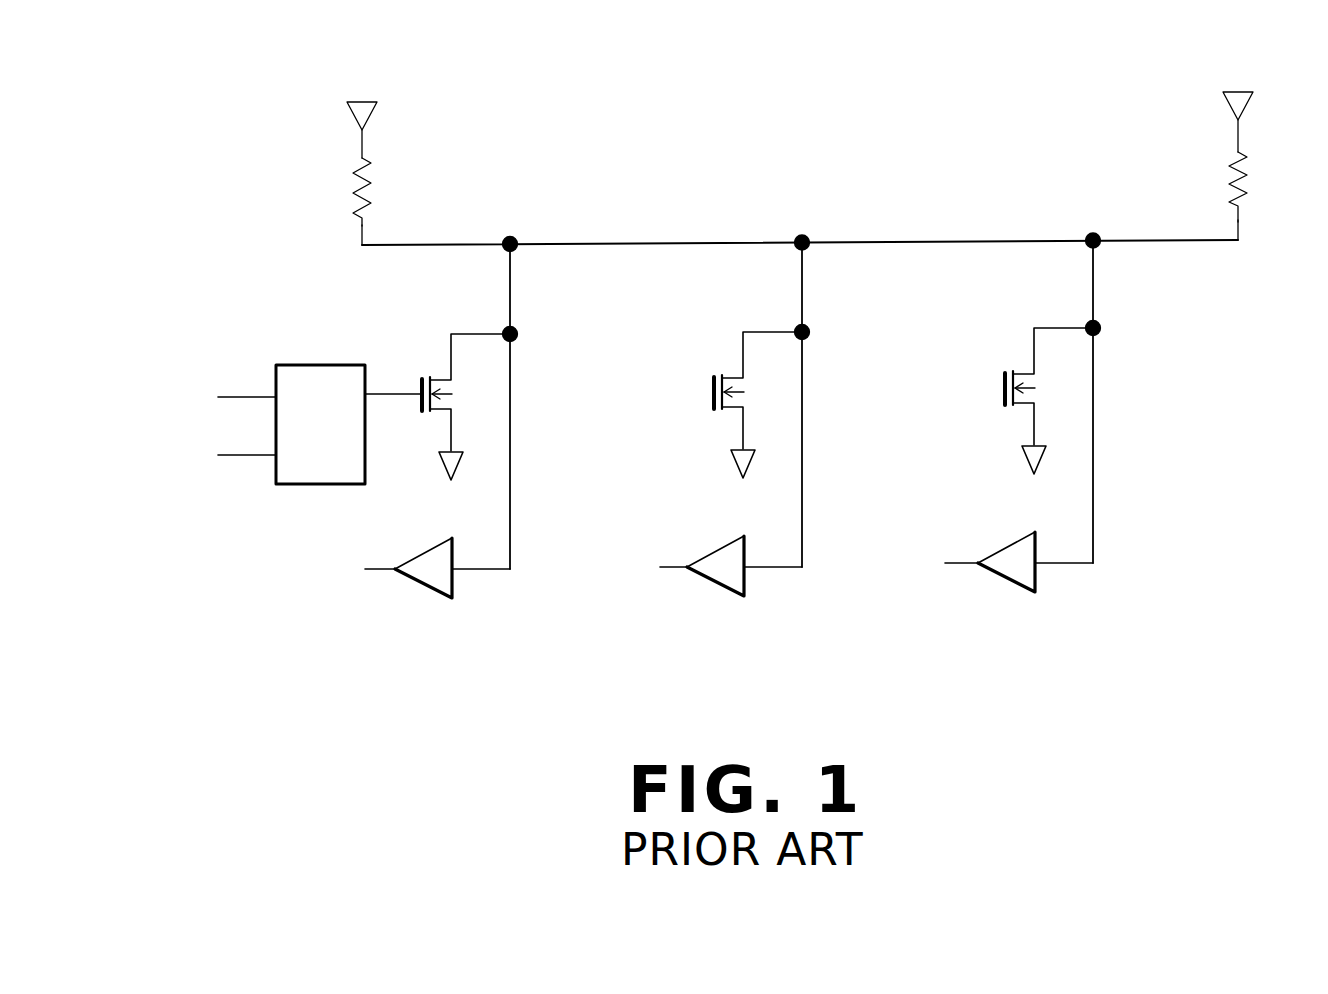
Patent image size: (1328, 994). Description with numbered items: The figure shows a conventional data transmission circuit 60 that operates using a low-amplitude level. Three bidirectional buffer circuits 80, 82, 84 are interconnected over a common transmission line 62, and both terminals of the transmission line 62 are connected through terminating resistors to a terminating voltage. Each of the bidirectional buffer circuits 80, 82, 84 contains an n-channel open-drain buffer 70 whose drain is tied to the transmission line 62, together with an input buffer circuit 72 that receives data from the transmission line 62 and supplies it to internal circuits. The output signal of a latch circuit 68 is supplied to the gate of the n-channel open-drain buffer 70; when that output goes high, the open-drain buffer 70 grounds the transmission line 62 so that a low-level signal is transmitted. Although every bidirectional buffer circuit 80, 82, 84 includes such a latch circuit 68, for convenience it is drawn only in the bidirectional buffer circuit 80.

The data transmission circuit 60 is at (727, 141).
The transmission line 62 is at (947, 240).
The latch circuit 68 is at (320, 486).
The n-channel open-drain buffer 70 is at (455, 395).
The input buffer circuit 72 is at (425, 584).
The bidirectional buffer circuit 80 is at (481, 450).
The bidirectional buffer circuit 82 is at (774, 448).
The bidirectional buffer circuit 84 is at (1063, 444).